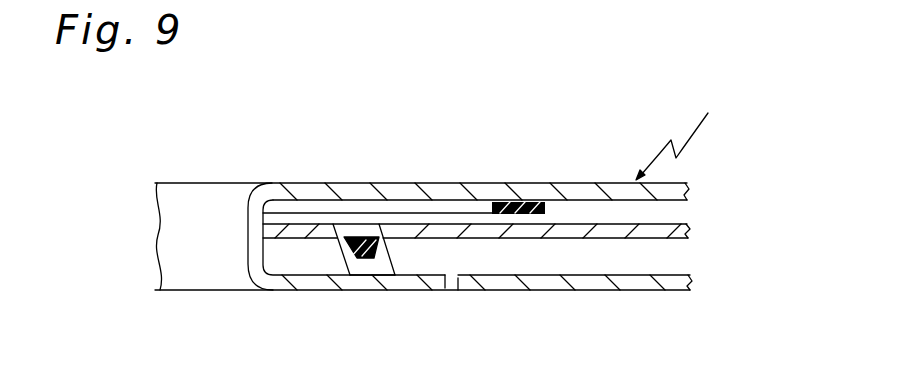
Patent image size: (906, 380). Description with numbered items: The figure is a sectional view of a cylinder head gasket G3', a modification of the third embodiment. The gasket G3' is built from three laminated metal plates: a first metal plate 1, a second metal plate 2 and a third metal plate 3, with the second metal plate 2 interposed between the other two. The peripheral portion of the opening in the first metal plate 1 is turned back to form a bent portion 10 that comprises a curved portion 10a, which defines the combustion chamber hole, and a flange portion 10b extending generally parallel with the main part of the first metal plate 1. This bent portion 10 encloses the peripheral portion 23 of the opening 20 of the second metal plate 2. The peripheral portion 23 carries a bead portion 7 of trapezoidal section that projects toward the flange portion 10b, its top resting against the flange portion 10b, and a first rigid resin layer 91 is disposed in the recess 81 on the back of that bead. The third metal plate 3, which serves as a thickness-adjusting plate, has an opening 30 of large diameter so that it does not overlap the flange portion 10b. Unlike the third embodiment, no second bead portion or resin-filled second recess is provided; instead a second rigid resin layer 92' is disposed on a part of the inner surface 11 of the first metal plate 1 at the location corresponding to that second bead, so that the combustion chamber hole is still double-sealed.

The first metal plate 1 is at (697, 188).
The second metal plate 2 is at (690, 236).
The third metal plate 3 is at (678, 283).
The bead portion 7 is at (355, 265).
The bent portion 10 is at (313, 280).
The curved portion 10a is at (248, 243).
The flange portion 10b is at (386, 278).
The inner surface of the first metal plate 11 is at (466, 203).
The opening of the second metal plate 20 is at (275, 233).
The peripheral portion of the opening of the second metal plate 23 is at (315, 232).
The opening of the third metal plate 30 is at (450, 284).
The recess of the first bead portion 81 is at (377, 237).
The first rigid resin layer 91 is at (360, 237).
The second rigid resin layer 92' is at (537, 139).
The gasket G3' is at (700, 127).